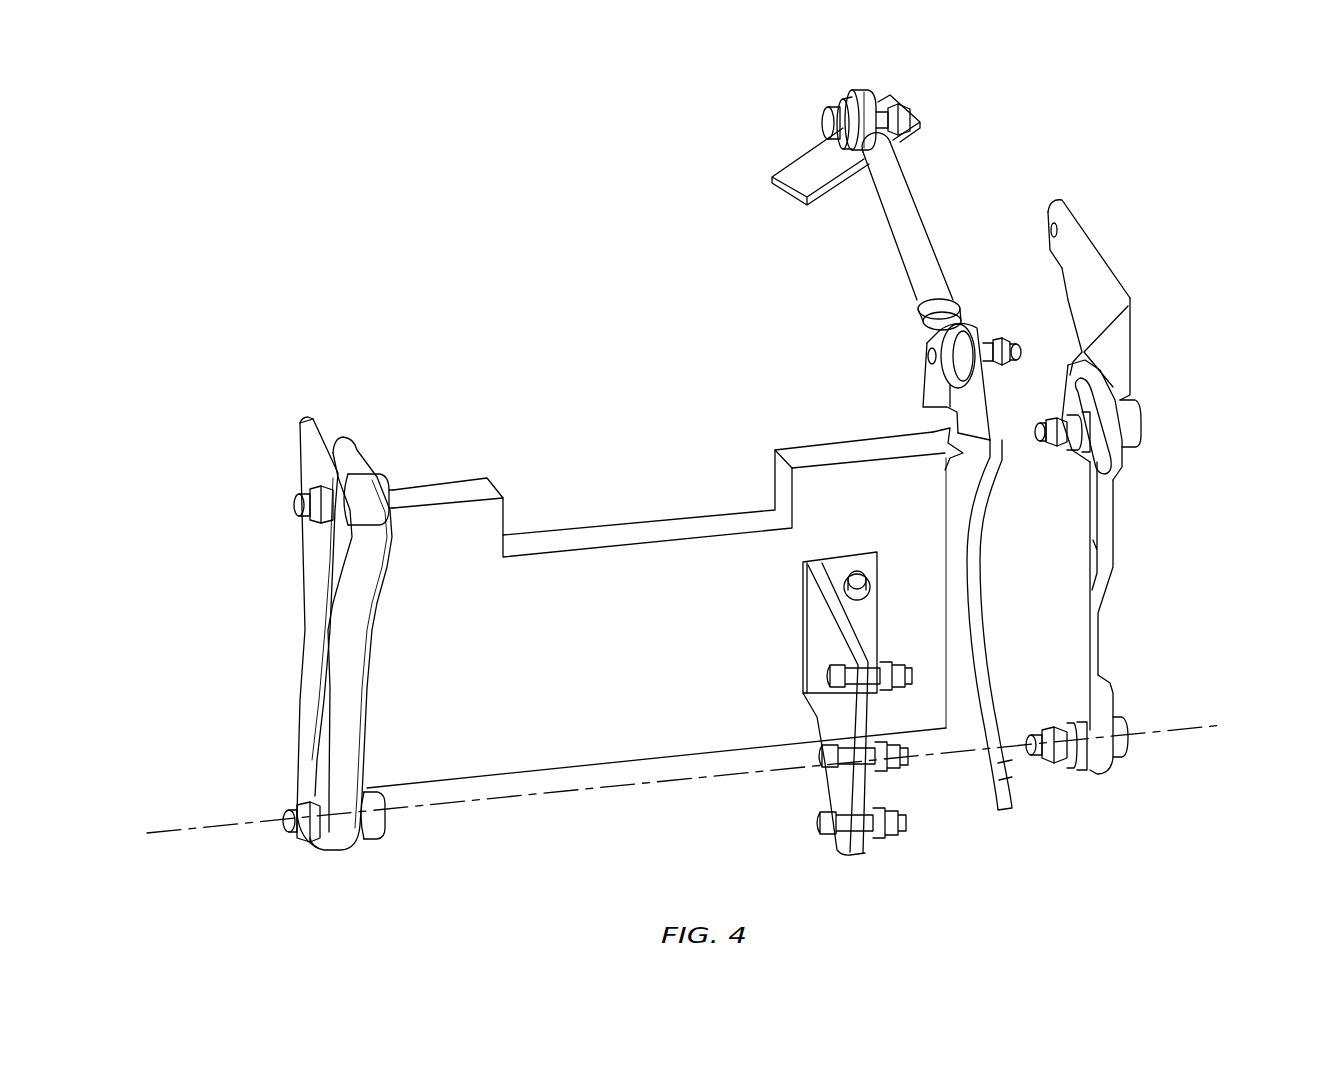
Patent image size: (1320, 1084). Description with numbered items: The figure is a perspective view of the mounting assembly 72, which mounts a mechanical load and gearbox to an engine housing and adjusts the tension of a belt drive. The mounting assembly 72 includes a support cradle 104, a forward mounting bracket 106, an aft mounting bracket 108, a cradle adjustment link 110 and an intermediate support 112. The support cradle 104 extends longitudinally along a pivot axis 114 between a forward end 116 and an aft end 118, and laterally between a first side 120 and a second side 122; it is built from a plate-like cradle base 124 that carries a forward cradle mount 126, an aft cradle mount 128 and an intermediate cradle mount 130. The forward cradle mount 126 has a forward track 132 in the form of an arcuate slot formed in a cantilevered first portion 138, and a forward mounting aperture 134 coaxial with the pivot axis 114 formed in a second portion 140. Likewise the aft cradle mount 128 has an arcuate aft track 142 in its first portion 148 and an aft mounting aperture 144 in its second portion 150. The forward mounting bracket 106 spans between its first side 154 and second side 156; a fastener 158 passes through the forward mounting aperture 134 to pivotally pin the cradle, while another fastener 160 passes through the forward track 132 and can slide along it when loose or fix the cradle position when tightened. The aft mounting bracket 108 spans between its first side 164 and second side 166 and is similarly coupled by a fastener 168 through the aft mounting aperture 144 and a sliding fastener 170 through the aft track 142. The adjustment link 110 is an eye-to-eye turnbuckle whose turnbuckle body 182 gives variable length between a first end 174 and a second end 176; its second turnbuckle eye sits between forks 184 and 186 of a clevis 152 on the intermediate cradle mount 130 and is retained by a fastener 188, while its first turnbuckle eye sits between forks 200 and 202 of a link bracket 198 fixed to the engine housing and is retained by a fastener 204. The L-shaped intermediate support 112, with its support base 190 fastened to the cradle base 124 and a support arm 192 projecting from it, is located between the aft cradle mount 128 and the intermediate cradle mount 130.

The mounting assembly 72 is at (1148, 116).
The support cradle 104 is at (486, 458).
The forward mounting bracket 106 is at (1150, 332).
The aft mounting bracket 108 is at (312, 647).
The cradle adjustment link 110 is at (904, 238).
The intermediate support 112 is at (820, 669).
The longitudinal pivot axis 114 is at (148, 835).
The longitudinal forward end 116 is at (1105, 595).
The longitudinal aft end 118 is at (355, 660).
The lateral first side 120 is at (968, 328).
The lateral second side 122 is at (1001, 812).
The cradle base 124 is at (505, 780).
The forward cradle mount 126 is at (1115, 505).
The aft cradle mount 128 is at (383, 600).
The intermediate cradle mount 130 is at (982, 583).
The forward track 132 is at (1120, 460).
The forward mounting aperture 134 is at (1057, 770).
The first portion 138 is at (1068, 355).
The second portion 140 is at (1111, 760).
The aft track 142 is at (362, 520).
The aft mounting aperture 144 is at (375, 838).
The first portion 148 is at (340, 602).
The second portion 150 is at (321, 844).
The clevis 152 is at (924, 344).
The lateral first side 154 is at (1098, 245).
The lateral second side 156 is at (1107, 770).
The fastener 158 is at (1128, 725).
The fastener 160 is at (1128, 432).
The lateral first side 164 is at (300, 432).
The lateral second side 166 is at (305, 842).
The fastener 168 is at (292, 812).
The fastener 170 is at (297, 503).
The first end 174 is at (870, 95).
The second end 176 is at (935, 364).
The turnbuckle body 182 is at (890, 240).
The first fork 184 is at (922, 338).
The second fork 186 is at (1025, 420).
The fastener 188 is at (996, 338).
The support base 190 is at (856, 558).
The support arm 192 is at (822, 625).
The link bracket 198 is at (786, 200).
The first fork 200 is at (838, 108).
The second fork 202 is at (898, 103).
The fastener 204 is at (822, 122).